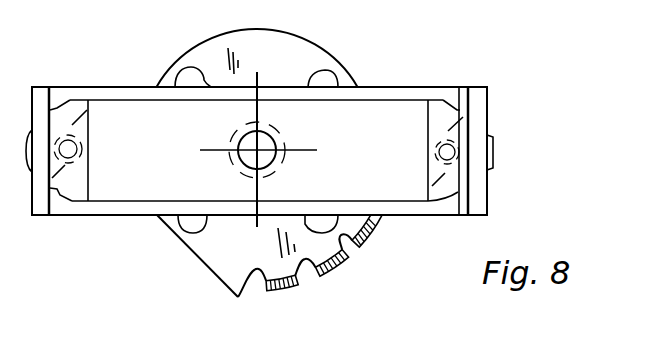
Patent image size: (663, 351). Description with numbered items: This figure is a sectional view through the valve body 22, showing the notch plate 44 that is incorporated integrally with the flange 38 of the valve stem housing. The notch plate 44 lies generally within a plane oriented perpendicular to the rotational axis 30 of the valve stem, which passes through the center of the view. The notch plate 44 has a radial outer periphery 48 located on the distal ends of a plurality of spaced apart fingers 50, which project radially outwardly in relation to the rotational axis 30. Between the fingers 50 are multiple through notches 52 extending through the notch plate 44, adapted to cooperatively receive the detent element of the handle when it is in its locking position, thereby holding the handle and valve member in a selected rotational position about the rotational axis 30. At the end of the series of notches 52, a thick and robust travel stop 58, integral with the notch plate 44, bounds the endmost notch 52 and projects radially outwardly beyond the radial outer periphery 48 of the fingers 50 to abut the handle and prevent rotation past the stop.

The valve body 22 is at (403, 84).
The rotational axis 30 is at (255, 147).
The notch plate 44 is at (196, 158).
The flange 38 is at (174, 250).
The radial outer periphery 48 is at (336, 268).
The fingers 50 is at (359, 277).
The through notches 52 is at (257, 288).
The travel stops 58 is at (220, 293).